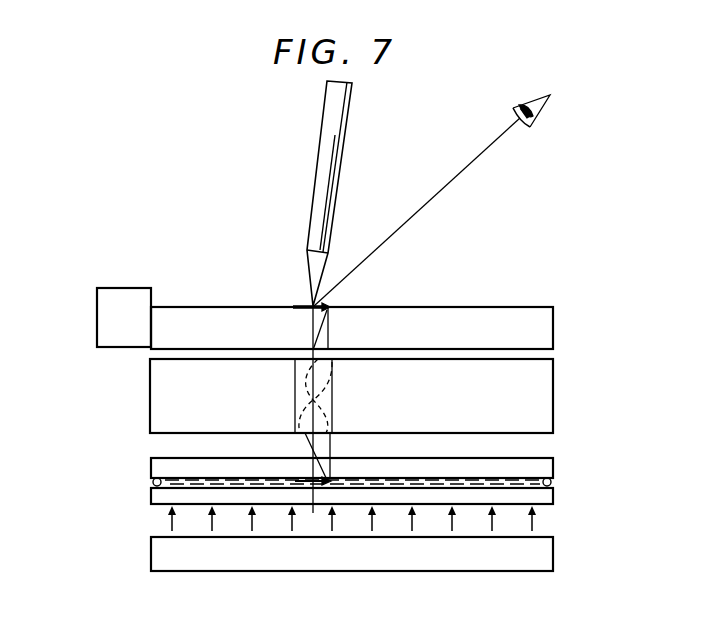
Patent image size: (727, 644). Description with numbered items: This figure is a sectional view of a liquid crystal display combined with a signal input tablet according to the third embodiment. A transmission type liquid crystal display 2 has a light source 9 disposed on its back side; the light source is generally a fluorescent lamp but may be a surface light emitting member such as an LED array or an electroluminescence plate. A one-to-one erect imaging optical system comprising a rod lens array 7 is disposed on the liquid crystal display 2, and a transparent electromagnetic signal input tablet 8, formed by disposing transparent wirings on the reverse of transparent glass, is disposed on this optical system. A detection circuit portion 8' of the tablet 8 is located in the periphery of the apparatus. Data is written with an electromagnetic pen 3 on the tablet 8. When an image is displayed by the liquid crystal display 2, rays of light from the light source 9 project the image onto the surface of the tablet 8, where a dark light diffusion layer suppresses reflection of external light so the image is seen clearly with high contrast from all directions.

The electromagnetic pen 3 is at (317, 164).
The detection circuit portion 8' is at (124, 294).
The transparent electromagnetic signal input tablet 8 is at (376, 328).
The rod lens array 7 is at (553, 395).
The liquid crystal display 2 is at (558, 458).
The light source 9 is at (553, 557).